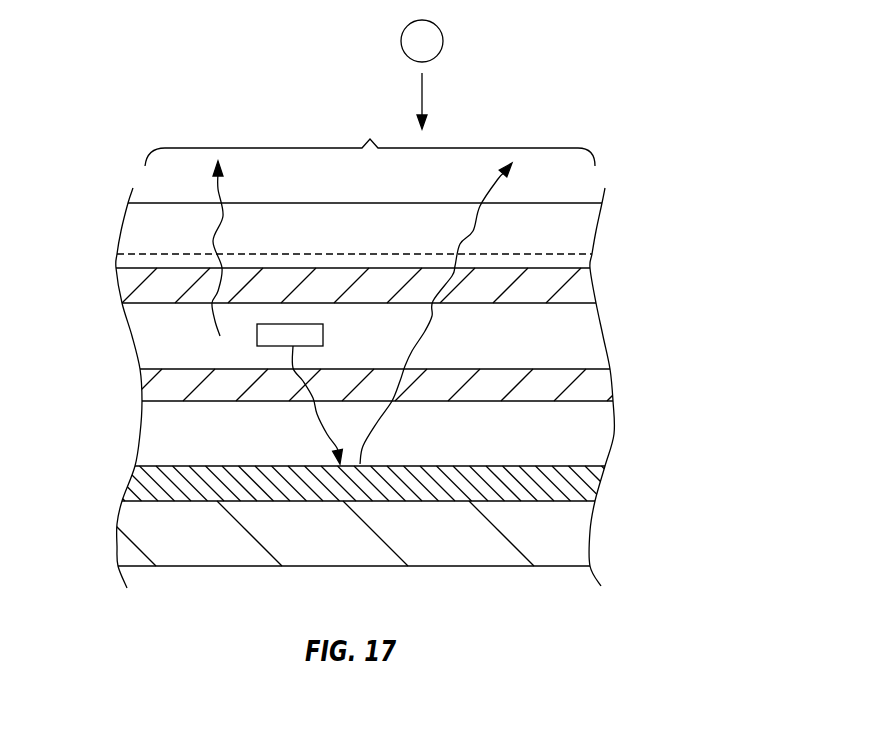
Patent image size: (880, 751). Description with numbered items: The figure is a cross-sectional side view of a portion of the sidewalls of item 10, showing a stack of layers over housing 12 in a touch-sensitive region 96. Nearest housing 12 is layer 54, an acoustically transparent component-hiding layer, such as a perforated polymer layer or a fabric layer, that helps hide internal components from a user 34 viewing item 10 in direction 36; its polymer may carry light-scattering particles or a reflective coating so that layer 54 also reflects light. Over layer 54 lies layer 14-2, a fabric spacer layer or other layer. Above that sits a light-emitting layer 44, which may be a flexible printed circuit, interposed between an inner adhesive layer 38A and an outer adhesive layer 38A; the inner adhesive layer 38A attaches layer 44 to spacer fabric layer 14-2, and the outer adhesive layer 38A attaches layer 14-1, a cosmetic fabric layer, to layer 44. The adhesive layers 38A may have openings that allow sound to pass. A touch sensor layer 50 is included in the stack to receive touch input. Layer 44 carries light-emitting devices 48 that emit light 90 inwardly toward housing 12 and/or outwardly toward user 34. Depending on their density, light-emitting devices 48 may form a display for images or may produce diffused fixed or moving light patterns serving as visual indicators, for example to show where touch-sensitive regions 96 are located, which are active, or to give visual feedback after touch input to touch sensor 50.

The item 10 is at (652, 100).
The housing 12 is at (577, 530).
The cosmetic fabric layer 14-1 is at (578, 230).
The fabric spacer layer 14-2 is at (600, 432).
The user 34 is at (443, 37).
The direction 36 is at (422, 90).
The adhesive layers 38A is at (580, 283).
The light-emitting layer 44 is at (587, 332).
The light-emitting devices 48 is at (304, 332).
The touch sensor layer 50 is at (150, 262).
The component-hiding layer 54 is at (587, 482).
The light 90 is at (220, 187).
The touch-sensitive regions 96 is at (370, 142).